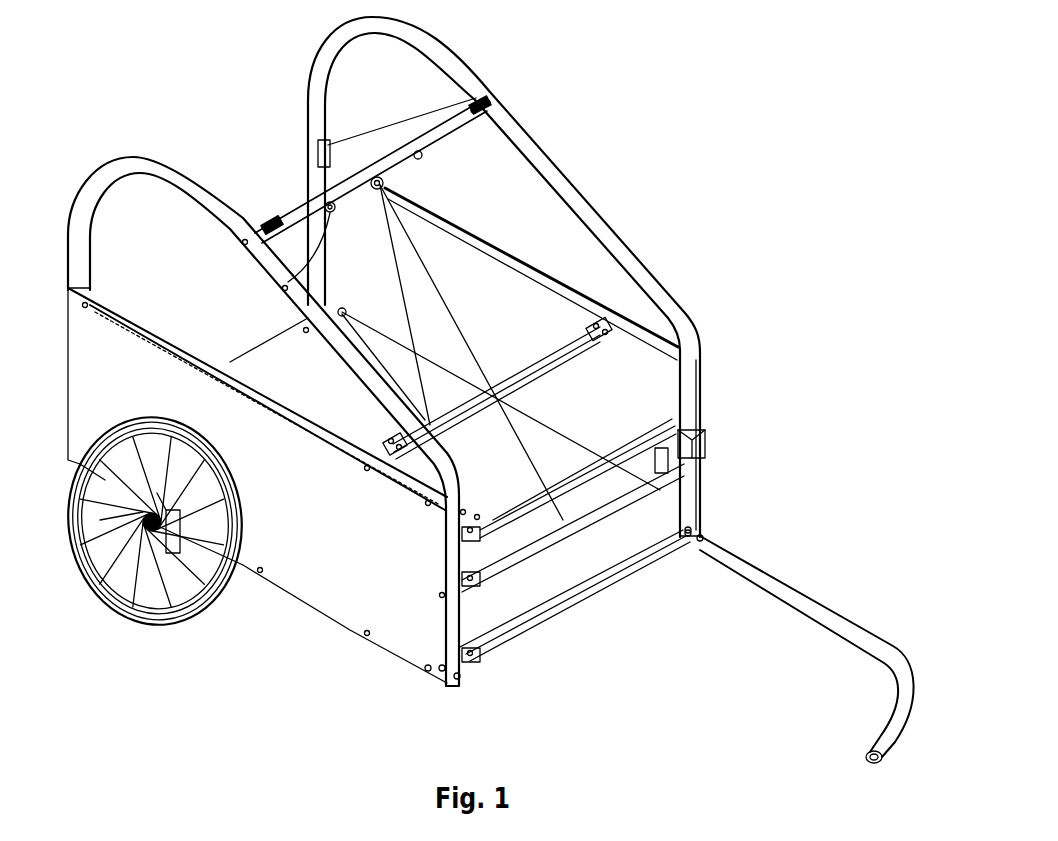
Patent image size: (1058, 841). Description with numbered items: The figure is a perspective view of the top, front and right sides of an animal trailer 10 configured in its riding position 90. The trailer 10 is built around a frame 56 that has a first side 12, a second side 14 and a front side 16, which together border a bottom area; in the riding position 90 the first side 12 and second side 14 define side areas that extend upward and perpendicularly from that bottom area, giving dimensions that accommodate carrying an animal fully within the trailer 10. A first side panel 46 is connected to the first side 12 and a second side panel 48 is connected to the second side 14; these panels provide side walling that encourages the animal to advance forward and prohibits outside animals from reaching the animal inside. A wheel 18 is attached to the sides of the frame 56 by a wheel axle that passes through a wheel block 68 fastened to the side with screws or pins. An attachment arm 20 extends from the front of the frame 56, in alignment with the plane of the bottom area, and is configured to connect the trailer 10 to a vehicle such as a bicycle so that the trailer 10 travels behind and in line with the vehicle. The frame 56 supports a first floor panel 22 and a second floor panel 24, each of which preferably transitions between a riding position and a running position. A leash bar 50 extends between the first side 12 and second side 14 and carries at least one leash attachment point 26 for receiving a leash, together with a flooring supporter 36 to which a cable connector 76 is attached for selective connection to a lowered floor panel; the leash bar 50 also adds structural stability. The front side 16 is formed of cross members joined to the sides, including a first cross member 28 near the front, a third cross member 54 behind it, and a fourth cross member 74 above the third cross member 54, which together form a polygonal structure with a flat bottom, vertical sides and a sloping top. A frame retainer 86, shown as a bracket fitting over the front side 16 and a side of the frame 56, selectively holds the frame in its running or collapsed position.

The trailer 10 is at (715, 65).
The first side 12 is at (752, 515).
The second side 14 is at (290, 623).
The front side 16 is at (560, 634).
The wheel 18 is at (104, 583).
The attachment arm 20 is at (787, 582).
The first floor panel 22 is at (565, 458).
The second floor panel 24 is at (447, 597).
The leash attachment point 26 is at (422, 160).
The first cross member 28 is at (625, 570).
The flooring supporter 36 is at (386, 186).
The first side panel 46 is at (632, 365).
The second side panel 48 is at (95, 369).
The leash bar 50 is at (458, 108).
The third cross member 54 is at (530, 510).
The frame 56 is at (150, 160).
The wheel block 68 is at (100, 520).
The fourth cross member 74 is at (605, 300).
The cable connector 76 is at (403, 308).
The frame retainer 86 is at (706, 450).
The riding position 90 is at (782, 193).